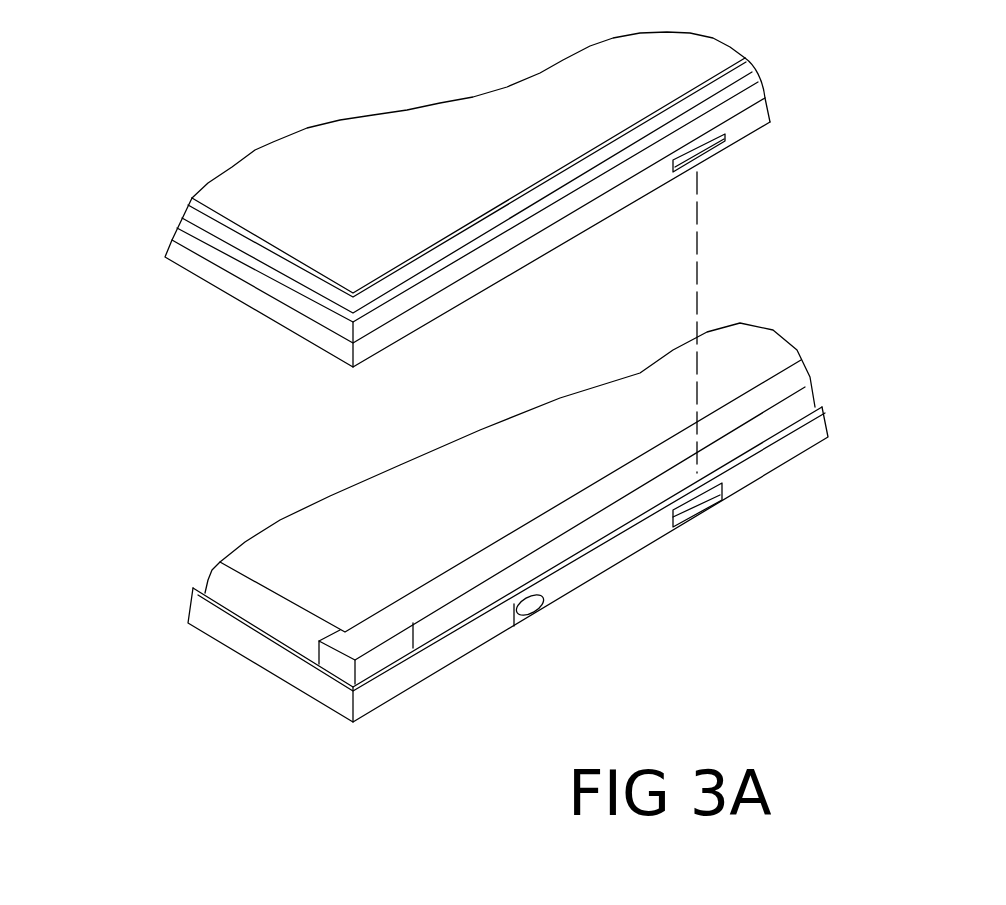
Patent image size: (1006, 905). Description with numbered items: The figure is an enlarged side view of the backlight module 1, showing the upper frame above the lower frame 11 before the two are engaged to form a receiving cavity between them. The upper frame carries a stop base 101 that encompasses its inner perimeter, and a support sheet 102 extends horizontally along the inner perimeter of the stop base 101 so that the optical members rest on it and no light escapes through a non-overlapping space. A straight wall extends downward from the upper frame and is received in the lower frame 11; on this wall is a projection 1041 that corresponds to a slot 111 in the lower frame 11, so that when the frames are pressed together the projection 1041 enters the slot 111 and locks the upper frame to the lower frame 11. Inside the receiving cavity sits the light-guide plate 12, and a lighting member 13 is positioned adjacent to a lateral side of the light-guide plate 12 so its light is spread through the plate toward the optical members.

The backlight module 1 is at (573, 377).
The stop base 101 is at (219, 214).
The support sheet 102 is at (276, 250).
The projection 1041 is at (703, 152).
The lower frame 11 is at (773, 463).
The slot 111 is at (693, 503).
The light-guide plate 12 is at (745, 358).
The lighting member 13 is at (483, 600).